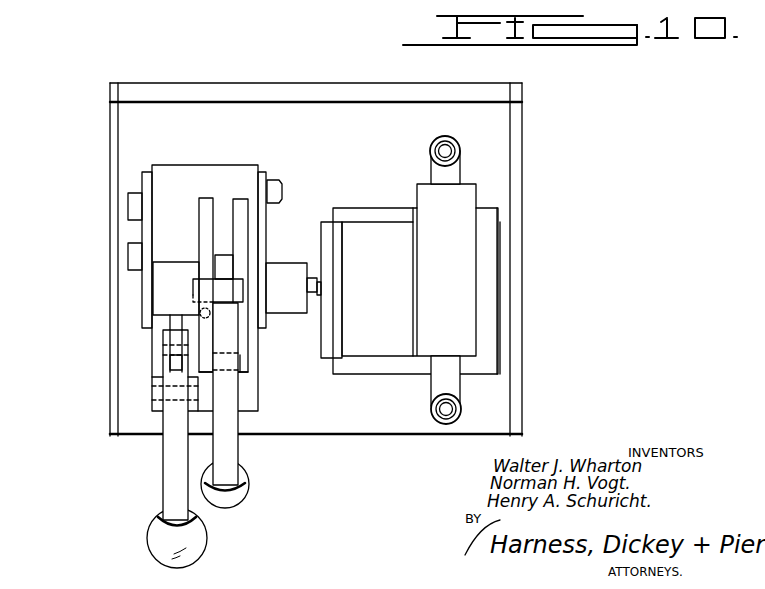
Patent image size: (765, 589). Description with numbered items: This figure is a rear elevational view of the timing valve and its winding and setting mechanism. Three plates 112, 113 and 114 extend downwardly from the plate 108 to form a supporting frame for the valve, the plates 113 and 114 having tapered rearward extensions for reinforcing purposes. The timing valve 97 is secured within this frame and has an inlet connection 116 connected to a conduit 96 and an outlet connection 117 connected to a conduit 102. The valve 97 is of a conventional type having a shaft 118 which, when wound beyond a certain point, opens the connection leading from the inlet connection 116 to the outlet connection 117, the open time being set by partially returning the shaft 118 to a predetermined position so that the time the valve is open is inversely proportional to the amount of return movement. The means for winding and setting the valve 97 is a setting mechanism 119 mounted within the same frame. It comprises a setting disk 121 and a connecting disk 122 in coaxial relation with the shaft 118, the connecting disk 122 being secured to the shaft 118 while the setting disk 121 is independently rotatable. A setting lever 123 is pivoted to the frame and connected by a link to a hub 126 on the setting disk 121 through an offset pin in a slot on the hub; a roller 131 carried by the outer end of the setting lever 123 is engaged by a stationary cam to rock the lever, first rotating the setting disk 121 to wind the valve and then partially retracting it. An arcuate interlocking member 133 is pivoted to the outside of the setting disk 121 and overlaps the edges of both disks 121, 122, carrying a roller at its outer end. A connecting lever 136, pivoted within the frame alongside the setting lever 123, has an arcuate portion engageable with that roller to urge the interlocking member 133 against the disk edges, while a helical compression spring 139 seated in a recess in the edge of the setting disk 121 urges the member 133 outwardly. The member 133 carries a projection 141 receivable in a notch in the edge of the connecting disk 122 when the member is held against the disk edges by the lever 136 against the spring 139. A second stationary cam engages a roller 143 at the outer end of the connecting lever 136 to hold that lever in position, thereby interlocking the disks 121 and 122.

The plate 108 is at (320, 90).
The plate 113 is at (112, 130).
The plate 114 is at (517, 170).
The plate 112 is at (365, 140).
The setting mechanism 119 is at (207, 162).
The setting disk 121 is at (208, 200).
The connecting disk 122 is at (245, 200).
The shaft 118 is at (311, 278).
The hub 126 is at (167, 277).
The helical compression spring 139 is at (213, 300).
The projection 141 is at (245, 335).
The connecting lever 136 is at (228, 420).
The setting lever 123 is at (170, 467).
The roller 131 is at (152, 537).
The roller 143 is at (250, 487).
The interlocking member 133 is at (240, 301).
The timing valve 97 is at (388, 357).
The outlet connection 117 is at (448, 368).
The inlet connection 116 is at (450, 172).
The conduit 96 is at (455, 142).
The conduit 102 is at (457, 413).